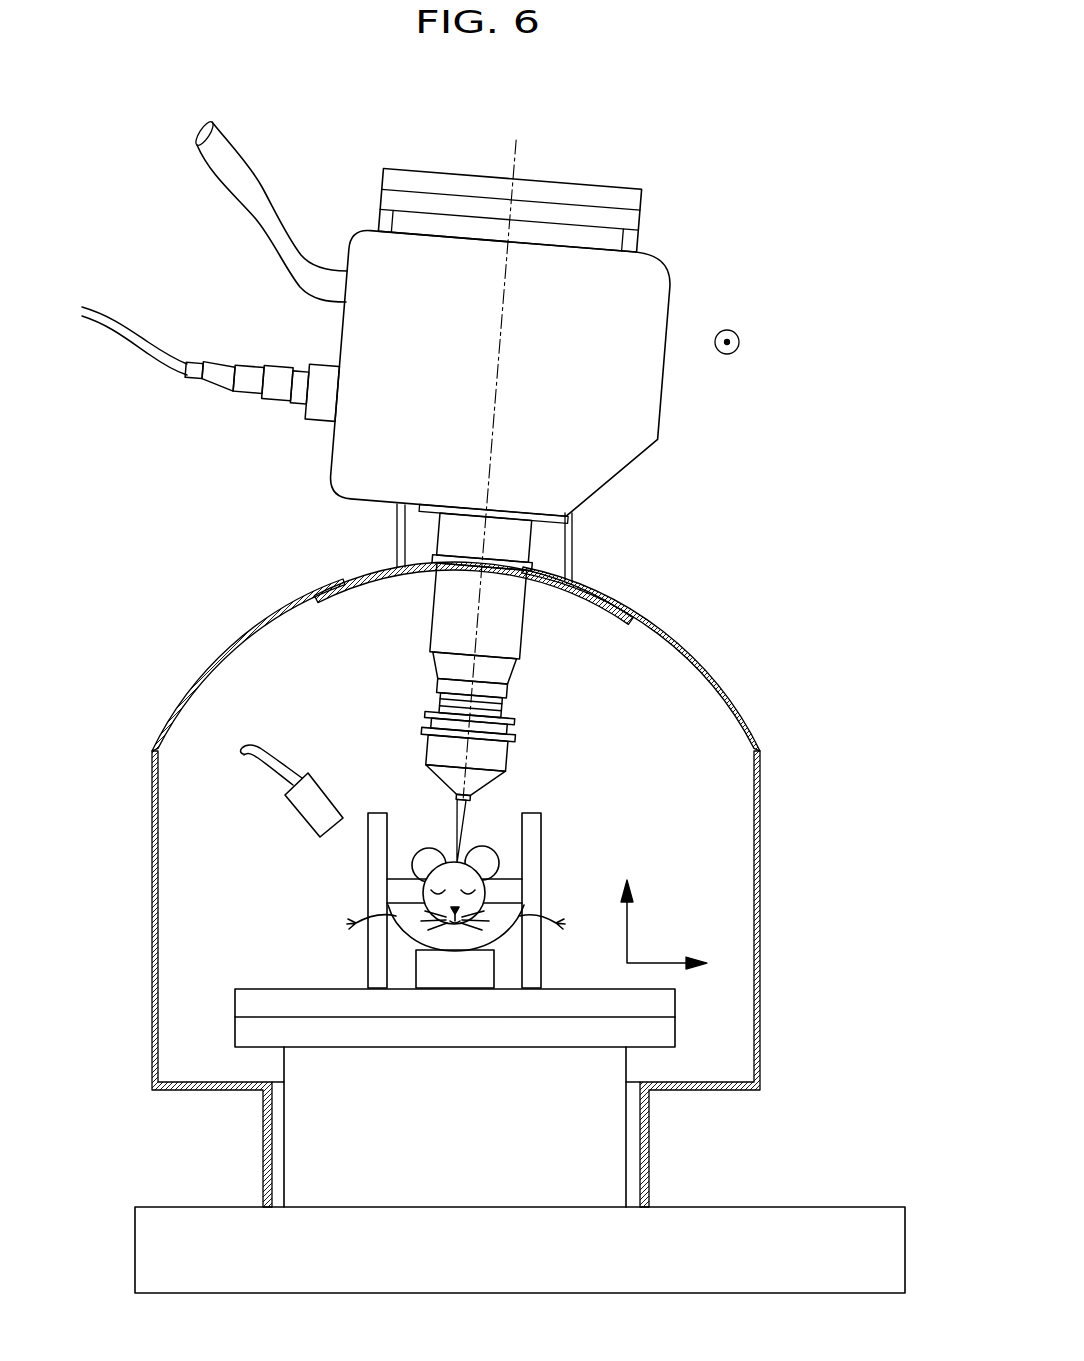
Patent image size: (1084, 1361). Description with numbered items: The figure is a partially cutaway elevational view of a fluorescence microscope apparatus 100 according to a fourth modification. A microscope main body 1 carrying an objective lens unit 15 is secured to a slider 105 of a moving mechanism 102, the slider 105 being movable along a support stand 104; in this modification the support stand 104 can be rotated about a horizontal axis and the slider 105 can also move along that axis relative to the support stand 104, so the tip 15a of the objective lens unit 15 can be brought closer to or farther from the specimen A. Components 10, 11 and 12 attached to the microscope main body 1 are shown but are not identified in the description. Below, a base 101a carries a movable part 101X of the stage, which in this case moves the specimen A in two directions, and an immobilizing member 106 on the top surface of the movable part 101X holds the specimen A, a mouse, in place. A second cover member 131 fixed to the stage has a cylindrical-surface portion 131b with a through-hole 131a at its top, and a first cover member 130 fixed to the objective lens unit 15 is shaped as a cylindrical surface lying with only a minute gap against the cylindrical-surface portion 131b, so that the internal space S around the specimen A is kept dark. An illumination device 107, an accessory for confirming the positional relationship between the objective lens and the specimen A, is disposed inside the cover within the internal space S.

The fluorescence microscope apparatus 100 is at (782, 246).
The microscope main body 1 is at (324, 473).
The signal cable 10 is at (152, 351).
The connector 11 is at (232, 368).
The supply tube 12 is at (260, 197).
The objective lens unit 15 is at (507, 757).
The tip of the objective lens unit 15a is at (450, 868).
The moving mechanism 102 is at (740, 380).
The support stand 104 is at (570, 535).
The slider 105 is at (622, 252).
The immobilizing member 106 is at (541, 829).
The illumination device 107 is at (295, 815).
The first cover member 130 is at (360, 586).
The second cover member 131 is at (760, 836).
The through-hole 131a is at (343, 578).
The cylindrical-surface portion 131b is at (641, 608).
The movable part 101X is at (675, 1002).
The base 101a is at (795, 1206).
The specimen A is at (413, 930).
The internal space S is at (190, 824).